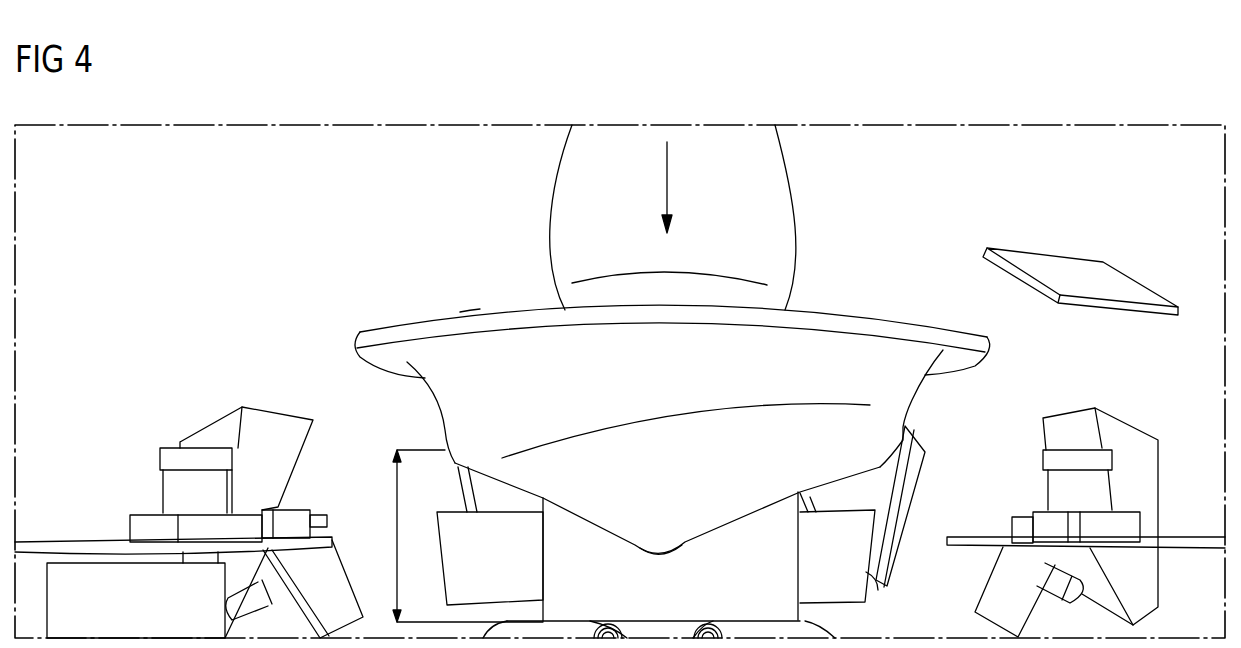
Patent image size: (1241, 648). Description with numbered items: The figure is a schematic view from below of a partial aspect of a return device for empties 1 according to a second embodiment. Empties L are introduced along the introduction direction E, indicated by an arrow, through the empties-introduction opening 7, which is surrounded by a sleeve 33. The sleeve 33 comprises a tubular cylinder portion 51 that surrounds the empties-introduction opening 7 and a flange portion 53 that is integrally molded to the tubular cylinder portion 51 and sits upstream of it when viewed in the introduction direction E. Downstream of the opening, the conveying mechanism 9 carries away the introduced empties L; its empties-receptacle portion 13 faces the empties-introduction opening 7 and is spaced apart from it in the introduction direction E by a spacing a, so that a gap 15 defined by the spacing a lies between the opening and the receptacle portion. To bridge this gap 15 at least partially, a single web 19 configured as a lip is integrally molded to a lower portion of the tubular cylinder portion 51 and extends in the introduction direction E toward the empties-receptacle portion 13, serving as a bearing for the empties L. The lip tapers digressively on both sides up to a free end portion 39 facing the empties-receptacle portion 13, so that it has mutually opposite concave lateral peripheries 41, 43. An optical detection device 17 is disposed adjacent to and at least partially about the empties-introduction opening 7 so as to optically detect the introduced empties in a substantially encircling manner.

The return device for empties 1 is at (213, 231).
The empties-introduction opening 7 is at (862, 310).
The conveying mechanism 9 is at (827, 623).
The empties-receptacle portion 13 is at (798, 617).
The gap 15 is at (534, 555).
The optical detection device 17 is at (211, 414).
The web 19 is at (656, 520).
The sleeve 33 is at (907, 402).
The free end portion 39 is at (690, 535).
The concave lateral periphery 41 is at (833, 470).
The concave lateral periphery 43 is at (595, 517).
The tubular cylinder portion 51 is at (447, 398).
The flange portion 53 is at (462, 312).
The introduction direction E is at (668, 178).
The empties L is at (785, 200).
The spacing a is at (397, 525).